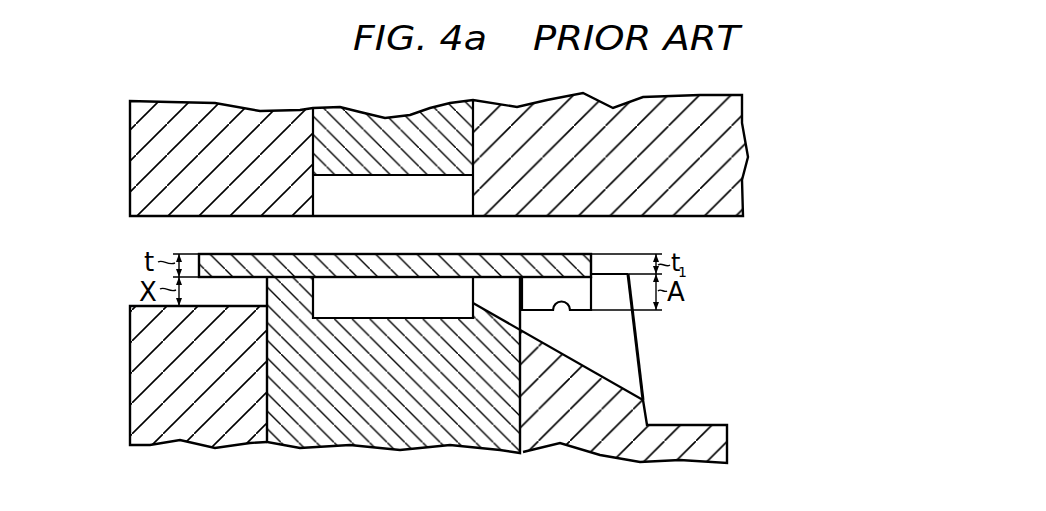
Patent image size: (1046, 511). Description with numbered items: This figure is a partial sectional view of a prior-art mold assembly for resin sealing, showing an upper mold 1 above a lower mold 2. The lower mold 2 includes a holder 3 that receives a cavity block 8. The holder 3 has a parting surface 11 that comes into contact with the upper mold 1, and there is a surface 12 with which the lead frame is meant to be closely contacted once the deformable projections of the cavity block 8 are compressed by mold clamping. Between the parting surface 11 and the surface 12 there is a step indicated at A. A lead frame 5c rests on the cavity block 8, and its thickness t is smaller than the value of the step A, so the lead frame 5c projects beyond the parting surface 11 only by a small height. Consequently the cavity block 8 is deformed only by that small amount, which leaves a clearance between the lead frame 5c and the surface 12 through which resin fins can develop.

The upper mold 1 is at (114, 136).
The lower mold 2 is at (113, 358).
The holder 3 is at (195, 440).
The lead frame 5c is at (215, 262).
The cavity block 8 is at (316, 442).
The parting surface 11 is at (622, 274).
The surface 12 is at (572, 310).